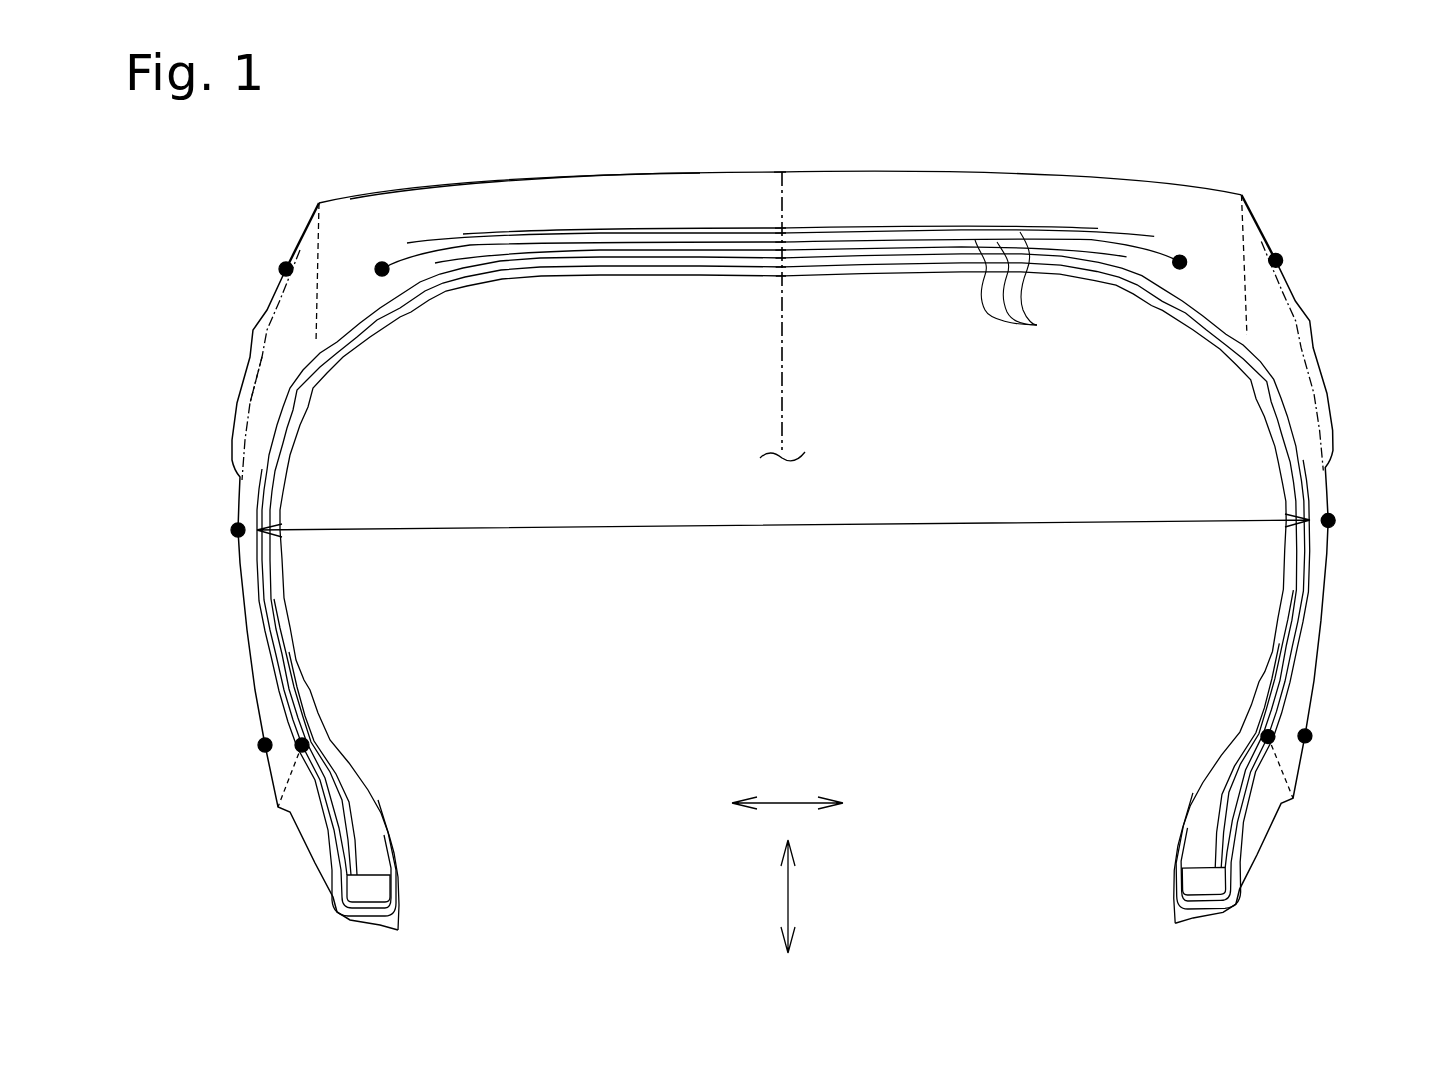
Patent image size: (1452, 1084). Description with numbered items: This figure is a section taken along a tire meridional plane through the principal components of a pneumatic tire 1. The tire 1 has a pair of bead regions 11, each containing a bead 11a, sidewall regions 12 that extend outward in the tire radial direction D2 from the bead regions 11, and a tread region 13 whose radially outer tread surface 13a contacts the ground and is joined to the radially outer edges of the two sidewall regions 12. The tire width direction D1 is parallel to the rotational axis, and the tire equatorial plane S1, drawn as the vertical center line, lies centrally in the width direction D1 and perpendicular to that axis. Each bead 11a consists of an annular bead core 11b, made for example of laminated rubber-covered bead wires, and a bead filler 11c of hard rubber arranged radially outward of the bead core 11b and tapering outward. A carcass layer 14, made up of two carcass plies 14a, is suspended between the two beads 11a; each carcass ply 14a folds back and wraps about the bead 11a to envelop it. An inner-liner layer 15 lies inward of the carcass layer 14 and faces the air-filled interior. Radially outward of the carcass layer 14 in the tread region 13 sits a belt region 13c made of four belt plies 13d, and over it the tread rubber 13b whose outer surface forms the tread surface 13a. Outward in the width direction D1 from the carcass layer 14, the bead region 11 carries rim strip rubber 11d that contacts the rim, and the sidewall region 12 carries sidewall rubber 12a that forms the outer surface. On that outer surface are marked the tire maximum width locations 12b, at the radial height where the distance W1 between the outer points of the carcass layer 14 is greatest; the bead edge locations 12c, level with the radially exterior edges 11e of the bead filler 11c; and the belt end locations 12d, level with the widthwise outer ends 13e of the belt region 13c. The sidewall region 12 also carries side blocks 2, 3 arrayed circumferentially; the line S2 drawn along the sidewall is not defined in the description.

The pneumatic tire 1 is at (1347, 82).
The bead region 11 is at (293, 910).
The bead 11a is at (462, 760).
The bead core 11b is at (370, 892).
The bead filler 11c is at (350, 830).
The rim strip rubber 11d is at (320, 840).
The exterior edge of bead filler 11e is at (302, 745).
The sidewall region 12 is at (206, 492).
The sidewall rubber 12a is at (245, 580).
The tire maximum width location 12b is at (238, 530).
The bead edge location 12c is at (265, 745).
The belt end location 12d is at (286, 269).
The tread region 13 is at (832, 142).
The tread surface 13a is at (568, 175).
The tread rubber 13b is at (703, 196).
The belt region 13c is at (987, 232).
The belt ply 13d is at (1038, 287).
The outer end of belt region 13e is at (382, 269).
The carcass layer 14 is at (632, 259).
The carcass ply 14a is at (352, 323).
The inner-liner layer 15 is at (857, 277).
The side block 2 is at (243, 308).
The side block 3 is at (1330, 308).
The tire equatorial plane S1 is at (782, 418).
The sidewall reference line S2 is at (250, 380).
The distance between exterior points of carcass layer W1 is at (783, 535).
The tire width direction D1 is at (787, 794).
The tire radial direction D2 is at (803, 896).